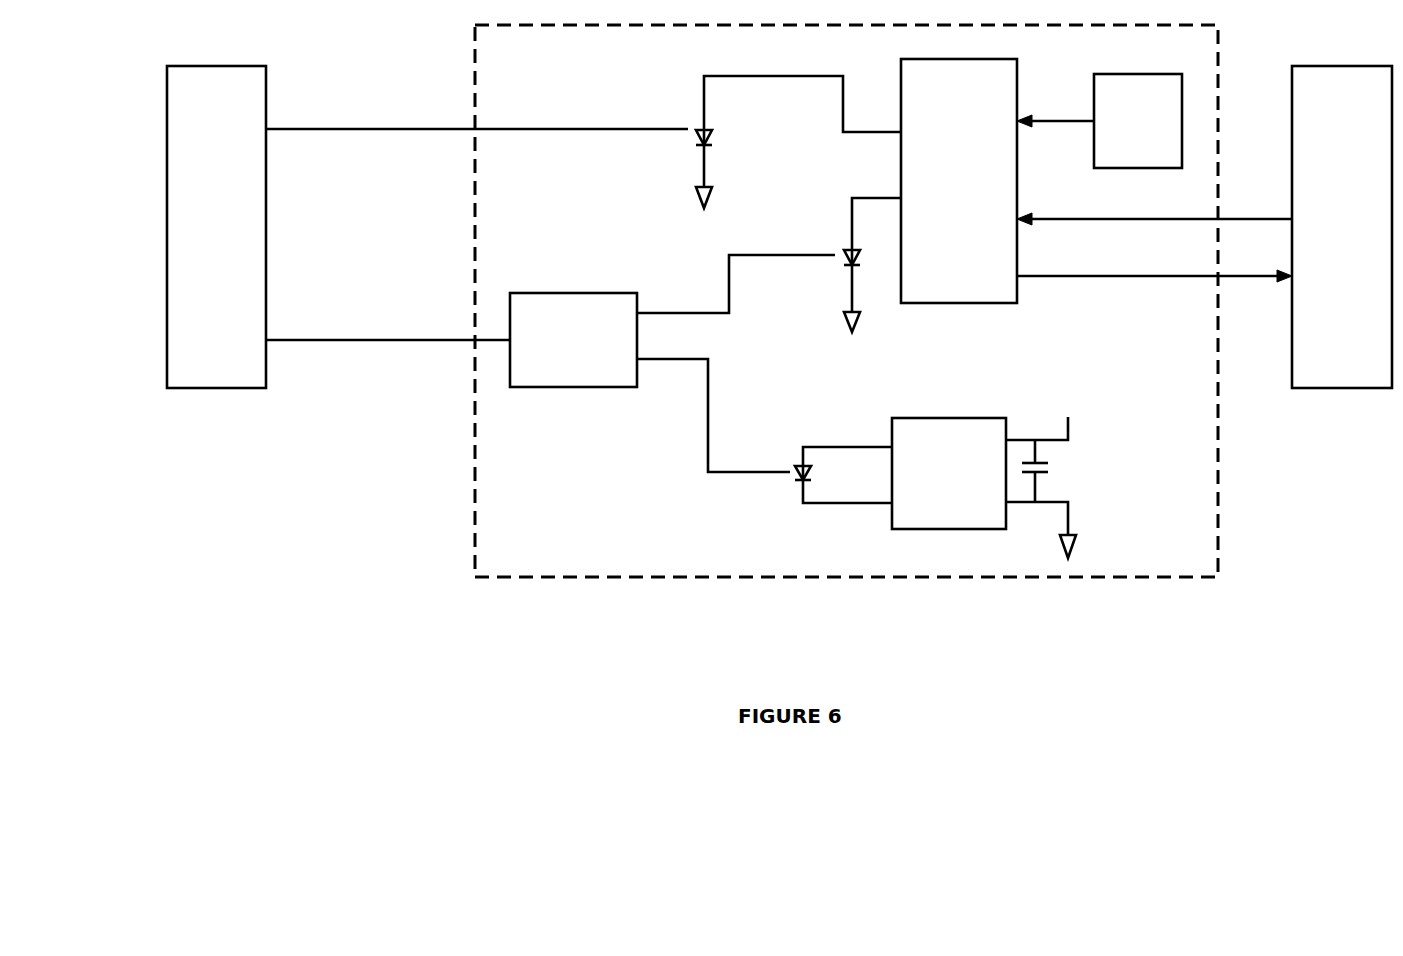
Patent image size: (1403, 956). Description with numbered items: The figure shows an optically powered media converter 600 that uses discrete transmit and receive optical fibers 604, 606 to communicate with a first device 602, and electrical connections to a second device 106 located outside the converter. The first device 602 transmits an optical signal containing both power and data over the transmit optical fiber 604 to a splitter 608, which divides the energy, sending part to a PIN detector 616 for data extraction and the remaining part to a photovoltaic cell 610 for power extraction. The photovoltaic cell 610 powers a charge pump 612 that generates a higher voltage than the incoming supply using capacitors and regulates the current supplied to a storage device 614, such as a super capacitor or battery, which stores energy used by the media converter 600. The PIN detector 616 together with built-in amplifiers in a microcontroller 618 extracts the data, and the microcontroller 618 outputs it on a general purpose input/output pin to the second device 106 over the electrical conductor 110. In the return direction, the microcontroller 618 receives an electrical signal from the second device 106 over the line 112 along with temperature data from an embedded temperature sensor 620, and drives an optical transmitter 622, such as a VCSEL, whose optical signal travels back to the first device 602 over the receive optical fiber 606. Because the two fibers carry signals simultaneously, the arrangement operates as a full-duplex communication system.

The optically powered media converter 600 is at (846, 301).
The first device 602 is at (216, 227).
The transmit optical fiber 604 is at (352, 342).
The receive optical fiber 606 is at (370, 128).
The splitter 608 is at (573, 340).
The photovoltaic cell 610 is at (797, 478).
The charge pump 612 is at (949, 473).
The storage device 614 is at (1050, 473).
The PIN detector 616 is at (843, 268).
The microcontroller 618 is at (959, 181).
The temperature sensor 620 is at (1099, 121).
The optical transmitter 622 is at (713, 135).
The TX signal line 112 is at (1080, 216).
The electrical conductor 110 is at (1080, 279).
The second device 106 is at (1342, 227).